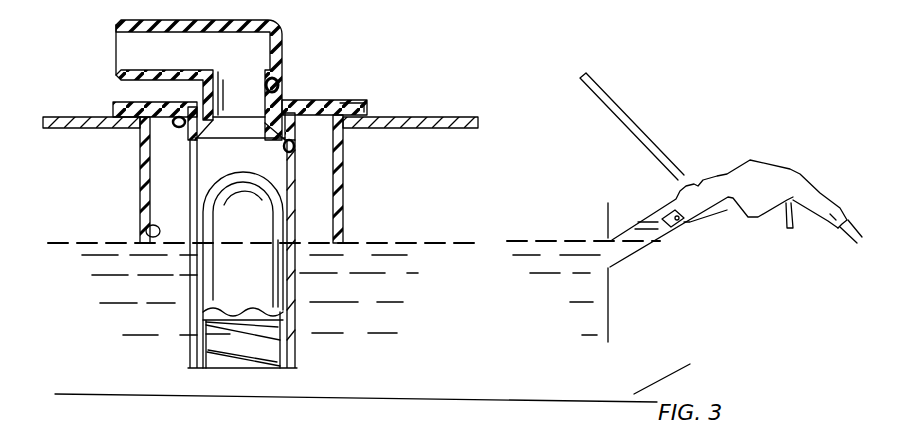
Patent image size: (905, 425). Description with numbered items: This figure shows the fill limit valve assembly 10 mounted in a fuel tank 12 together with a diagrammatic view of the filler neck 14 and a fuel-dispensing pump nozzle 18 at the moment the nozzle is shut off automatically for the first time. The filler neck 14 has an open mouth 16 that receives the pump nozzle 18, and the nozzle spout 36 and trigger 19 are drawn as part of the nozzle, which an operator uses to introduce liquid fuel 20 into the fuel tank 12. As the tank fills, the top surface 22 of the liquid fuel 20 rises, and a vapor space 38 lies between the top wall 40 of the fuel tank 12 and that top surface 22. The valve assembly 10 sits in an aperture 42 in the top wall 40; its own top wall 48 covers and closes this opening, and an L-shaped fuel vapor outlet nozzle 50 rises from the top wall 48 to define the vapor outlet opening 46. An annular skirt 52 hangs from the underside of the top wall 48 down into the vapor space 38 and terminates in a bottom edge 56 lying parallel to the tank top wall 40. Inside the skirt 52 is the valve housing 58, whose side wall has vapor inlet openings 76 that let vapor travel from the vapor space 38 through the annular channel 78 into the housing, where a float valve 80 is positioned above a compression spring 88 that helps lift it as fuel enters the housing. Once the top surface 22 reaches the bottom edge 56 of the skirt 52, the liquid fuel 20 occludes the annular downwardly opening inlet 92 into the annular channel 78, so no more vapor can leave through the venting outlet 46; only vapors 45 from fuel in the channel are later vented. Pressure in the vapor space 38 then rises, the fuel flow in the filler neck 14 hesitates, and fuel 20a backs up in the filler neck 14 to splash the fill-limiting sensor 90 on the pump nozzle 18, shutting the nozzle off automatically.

The fill limit valve assembly 10 is at (390, 182).
The fuel tank 12 is at (615, 330).
The filler neck 14 is at (670, 200).
The open mouth 16 is at (705, 177).
The pump nozzle 18 is at (773, 185).
The nozzle trigger 19 is at (789, 231).
The liquid fuel 20 is at (398, 292).
The fuel in filler neck 20a is at (640, 225).
The top surface of liquid fuel 22 is at (386, 239).
The nozzle spout 36 is at (657, 147).
The vapor space 38 is at (66, 143).
The top wall of fuel tank 40 is at (448, 117).
The aperture 42 is at (140, 150).
The vapors 45 is at (186, 47).
The vapor outlet opening 46 is at (280, 85).
The top wall 48 is at (344, 98).
The L-shaped fuel vapor outlet nozzle 50 is at (287, 34).
The annular skirt 52 is at (350, 172).
The bottom edge 56 is at (338, 245).
The valve housing 58 is at (302, 346).
The vapor inlet openings 76 is at (178, 128).
The annular channel 78 is at (170, 202).
The float valve 80 is at (263, 290).
The compression spring 88 is at (247, 360).
The fill-limiting sensor 90 is at (677, 221).
The annular downwardly opening inlet 92 is at (146, 226).